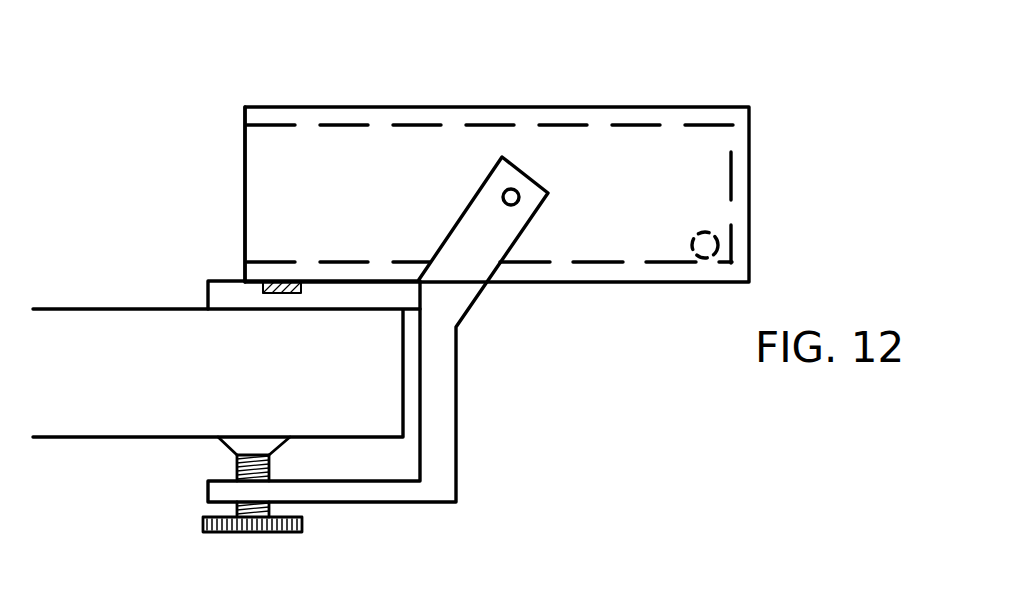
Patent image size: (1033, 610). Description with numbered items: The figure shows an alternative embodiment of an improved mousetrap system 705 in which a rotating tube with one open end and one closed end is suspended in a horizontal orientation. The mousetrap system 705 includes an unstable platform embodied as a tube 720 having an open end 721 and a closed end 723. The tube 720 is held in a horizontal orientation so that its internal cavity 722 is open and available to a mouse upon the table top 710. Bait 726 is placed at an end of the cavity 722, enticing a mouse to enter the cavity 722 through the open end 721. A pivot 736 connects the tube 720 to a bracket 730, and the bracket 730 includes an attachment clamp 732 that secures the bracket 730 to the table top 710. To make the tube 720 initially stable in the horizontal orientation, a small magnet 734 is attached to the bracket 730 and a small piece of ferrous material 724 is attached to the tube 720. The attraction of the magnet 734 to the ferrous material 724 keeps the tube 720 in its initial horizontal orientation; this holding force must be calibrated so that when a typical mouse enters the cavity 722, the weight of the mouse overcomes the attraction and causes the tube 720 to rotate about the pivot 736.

The mousetrap system 705 is at (717, 65).
The table top 710 is at (156, 320).
The tube 720 is at (603, 283).
The open end 721 is at (245, 177).
The internal cavity 722 is at (258, 167).
The closed end 723 is at (750, 170).
The ferrous material 724 is at (280, 262).
The bait 726 is at (720, 235).
The bracket 730 is at (448, 435).
The attachment clamp 732 is at (277, 537).
The magnet 734 is at (272, 293).
The pivot 736 is at (503, 190).